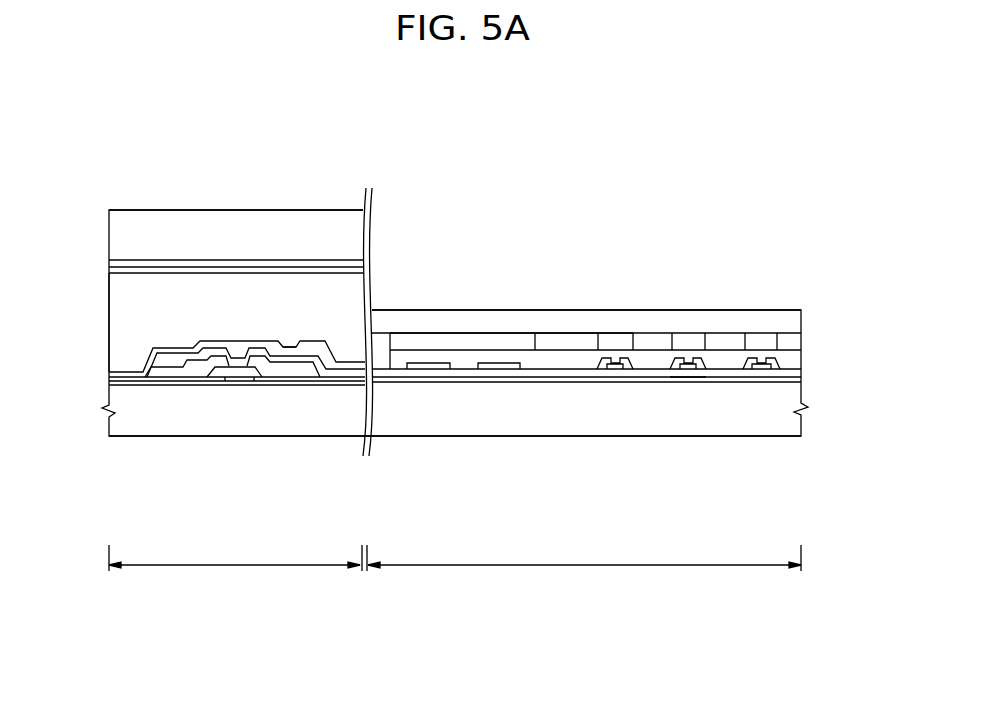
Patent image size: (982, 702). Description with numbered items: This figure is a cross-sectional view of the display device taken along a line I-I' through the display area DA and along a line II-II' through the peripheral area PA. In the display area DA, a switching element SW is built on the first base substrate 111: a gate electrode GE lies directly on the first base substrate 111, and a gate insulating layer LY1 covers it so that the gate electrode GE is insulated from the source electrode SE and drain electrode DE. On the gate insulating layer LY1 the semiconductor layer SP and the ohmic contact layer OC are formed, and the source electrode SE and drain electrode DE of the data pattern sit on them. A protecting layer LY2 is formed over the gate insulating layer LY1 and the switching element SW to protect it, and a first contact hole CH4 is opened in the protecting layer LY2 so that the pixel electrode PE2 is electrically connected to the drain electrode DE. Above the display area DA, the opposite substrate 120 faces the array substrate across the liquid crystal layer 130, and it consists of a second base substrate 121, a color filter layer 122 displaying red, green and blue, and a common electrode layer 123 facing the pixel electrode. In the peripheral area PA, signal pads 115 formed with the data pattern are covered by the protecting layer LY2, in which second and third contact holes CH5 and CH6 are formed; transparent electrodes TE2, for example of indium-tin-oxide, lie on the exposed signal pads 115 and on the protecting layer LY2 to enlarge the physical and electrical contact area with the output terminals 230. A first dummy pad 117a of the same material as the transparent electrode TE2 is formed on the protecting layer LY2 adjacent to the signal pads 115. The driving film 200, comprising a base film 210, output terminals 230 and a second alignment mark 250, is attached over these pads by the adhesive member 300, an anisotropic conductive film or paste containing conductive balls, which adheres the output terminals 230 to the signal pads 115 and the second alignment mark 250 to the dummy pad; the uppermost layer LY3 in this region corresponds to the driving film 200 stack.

The opposite substrate 120 is at (293, 150).
The second base substrate 121 is at (200, 235).
The color filter layer 122 is at (240, 267).
The common electrode layer 123 is at (280, 273).
The first contact hole CH4 is at (297, 345).
The liquid crystal layer 130 is at (109, 302).
The protecting layer LY2 is at (109, 371).
The gate insulating layer LY1 is at (109, 383).
The first base substrate 111 is at (109, 422).
The adhesive member 300 is at (458, 355).
The driving film 200 is at (632, 253).
The second alignment mark 250 is at (507, 340).
The base film 210 is at (572, 320).
The output terminal 230 is at (607, 342).
The second contact hole CH5 is at (617, 360).
The third contact hole CH6 is at (688, 362).
The third layer LY3 is at (801, 343).
The source electrode SE is at (180, 361).
The semiconductor layer SP is at (194, 375).
The gate electrode GE is at (237, 381).
The ohmic contact layer OC is at (267, 356).
The drain electrode DE is at (297, 363).
The pixel electrode PE2 is at (332, 364).
The switching element SW is at (312, 500).
The first dummy pad 117a is at (425, 369).
The signal pad 115 is at (692, 377).
The transparent electrode TE2 is at (762, 366).
The line I-I' I is at (94, 481).
The line I- I' is at (359, 481).
The line II-II' II is at (375, 481).
The line II- II' is at (805, 481).
The display area DA is at (238, 571).
The peripheral area PA is at (584, 572).